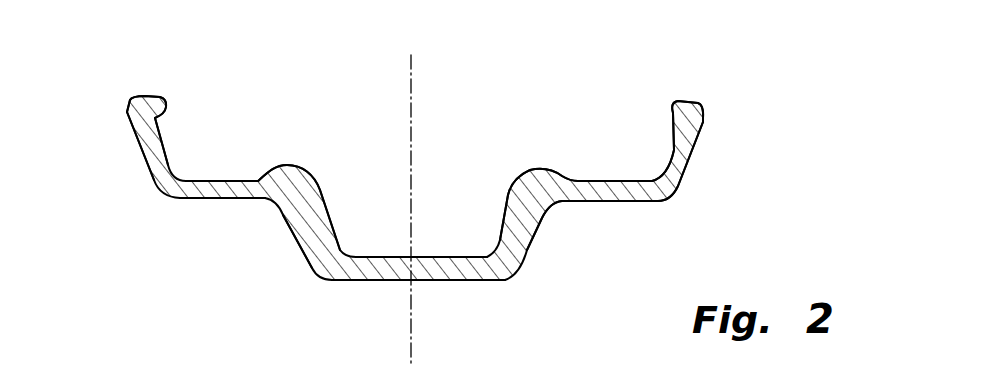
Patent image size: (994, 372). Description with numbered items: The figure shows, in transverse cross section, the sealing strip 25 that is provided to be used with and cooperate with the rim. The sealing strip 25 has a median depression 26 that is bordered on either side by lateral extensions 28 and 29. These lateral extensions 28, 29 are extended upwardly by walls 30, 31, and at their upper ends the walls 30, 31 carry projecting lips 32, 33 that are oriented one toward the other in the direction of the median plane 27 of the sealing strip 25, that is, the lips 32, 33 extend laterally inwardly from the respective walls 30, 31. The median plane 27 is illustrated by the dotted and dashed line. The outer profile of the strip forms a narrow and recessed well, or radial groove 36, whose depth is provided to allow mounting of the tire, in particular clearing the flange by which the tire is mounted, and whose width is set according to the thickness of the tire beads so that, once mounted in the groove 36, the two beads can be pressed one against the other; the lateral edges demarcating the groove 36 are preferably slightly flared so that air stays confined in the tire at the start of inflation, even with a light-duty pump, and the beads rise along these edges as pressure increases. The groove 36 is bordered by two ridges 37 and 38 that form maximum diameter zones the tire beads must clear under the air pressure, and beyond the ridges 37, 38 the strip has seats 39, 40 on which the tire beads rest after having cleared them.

The sealing strip 25 is at (719, 125).
The median depression 26 is at (524, 258).
The median plane 27 is at (418, 90).
The lateral extension 28 is at (192, 200).
The lateral extension 29 is at (605, 201).
The wall 30 is at (157, 162).
The wall 31 is at (680, 158).
The projecting lip 32 is at (153, 97).
The projecting lip 33 is at (680, 102).
The radial groove 36 is at (334, 230).
The ridge 37 is at (290, 165).
The ridge 38 is at (538, 167).
The seat 39 is at (213, 181).
The seat 40 is at (597, 181).